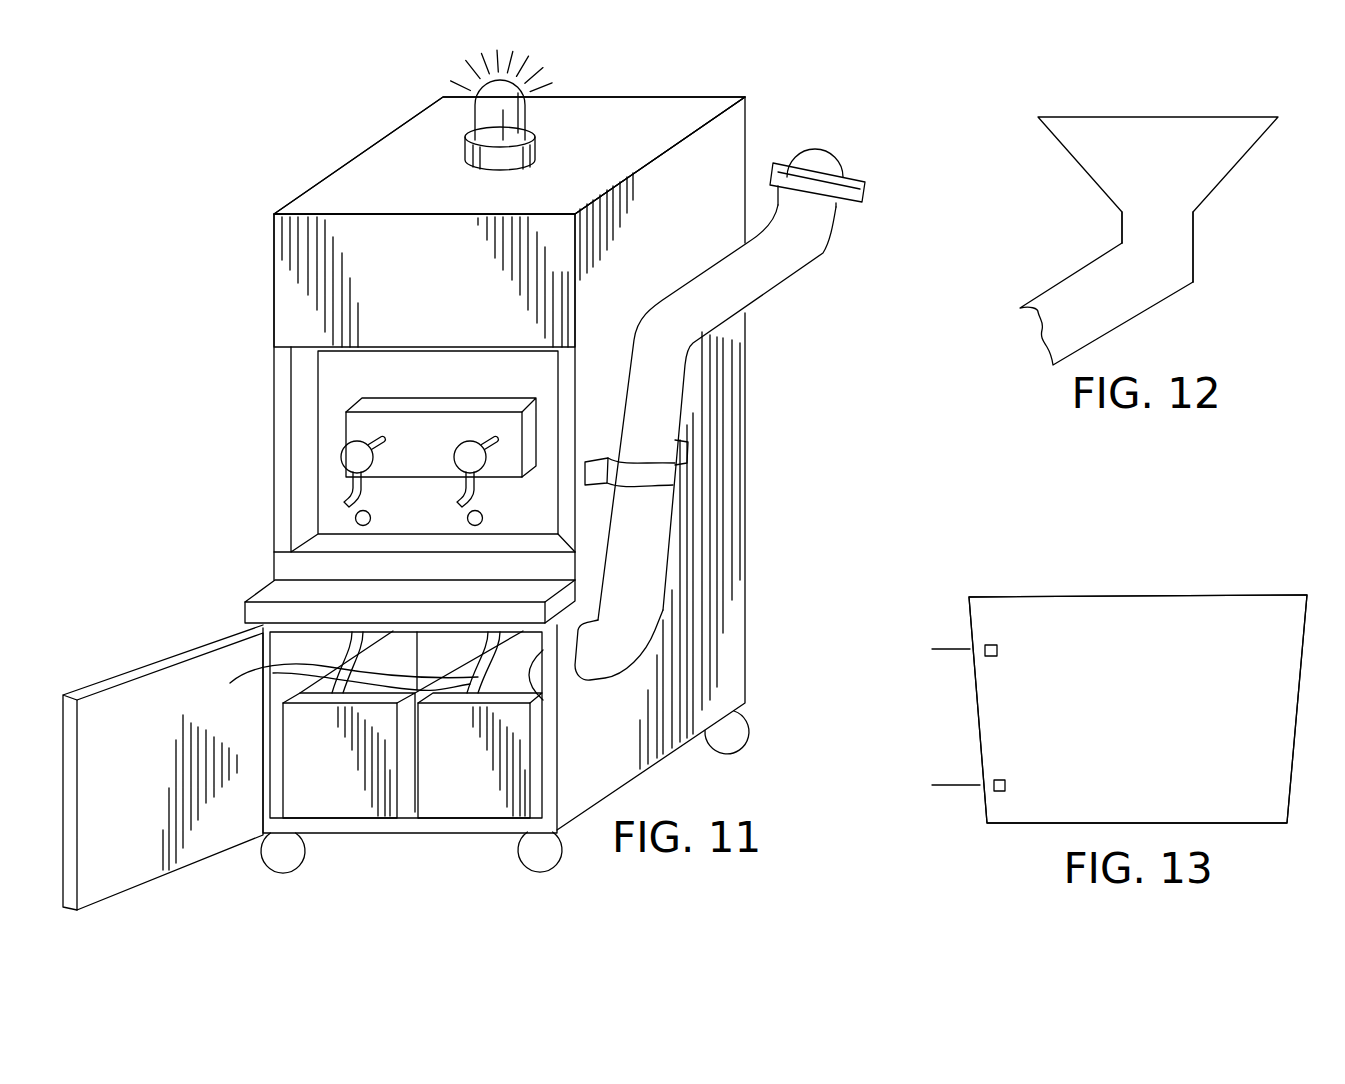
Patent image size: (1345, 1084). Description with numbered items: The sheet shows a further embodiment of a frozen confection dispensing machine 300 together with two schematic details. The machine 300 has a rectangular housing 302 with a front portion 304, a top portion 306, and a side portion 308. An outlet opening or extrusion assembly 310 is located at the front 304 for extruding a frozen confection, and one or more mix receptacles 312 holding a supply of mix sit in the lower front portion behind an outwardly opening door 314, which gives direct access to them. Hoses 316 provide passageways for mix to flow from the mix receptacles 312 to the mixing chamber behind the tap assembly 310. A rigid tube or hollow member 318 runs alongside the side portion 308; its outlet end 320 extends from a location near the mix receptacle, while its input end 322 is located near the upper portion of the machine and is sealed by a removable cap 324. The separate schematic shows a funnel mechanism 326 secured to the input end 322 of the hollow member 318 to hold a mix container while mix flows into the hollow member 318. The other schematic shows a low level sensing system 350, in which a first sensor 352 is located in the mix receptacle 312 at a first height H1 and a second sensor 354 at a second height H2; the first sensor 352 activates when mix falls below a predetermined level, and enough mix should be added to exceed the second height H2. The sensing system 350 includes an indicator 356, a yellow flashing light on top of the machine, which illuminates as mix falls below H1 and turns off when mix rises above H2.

In FIG. 11, the frozen confection dispensing machine 300 is at (647, 82).
In FIG. 11, the rectangular housing 302 is at (313, 205).
In FIG. 11, the front portion 304 is at (411, 300).
In FIG. 11, the top portion 306 is at (659, 120).
In FIG. 11, the side portion 308 is at (677, 242).
In FIG. 11, the extrusion assembly 310 is at (413, 432).
In FIG. 11, the mix receptacle 312 is at (299, 745).
In FIG. 13, the mix receptacle 312 is at (1130, 707).
In FIG. 11, the door 314 is at (118, 799).
In FIG. 11, the hoses 316 is at (283, 663).
In FIG. 11, the hollow member 318 is at (685, 308).
In FIG. 12, the hollow member 318 is at (1053, 329).
In FIG. 11, the outlet end 320 is at (603, 657).
In FIG. 11, the input end 322 is at (782, 253).
In FIG. 12, the input end 322 is at (1163, 245).
In FIG. 11, the removable cap 324 is at (818, 187).
In FIG. 12, the funnel mechanism 326 is at (1140, 150).
In FIG. 13, the low level sensing system 350 is at (1168, 584).
In FIG. 13, the first sensor 352 is at (1000, 780).
In FIG. 13, the second sensor 354 is at (997, 650).
In FIG. 11, the indicator 356 is at (475, 121).
In FIG. 13, the first height H1 is at (935, 787).
In FIG. 13, the second height H2 is at (930, 652).